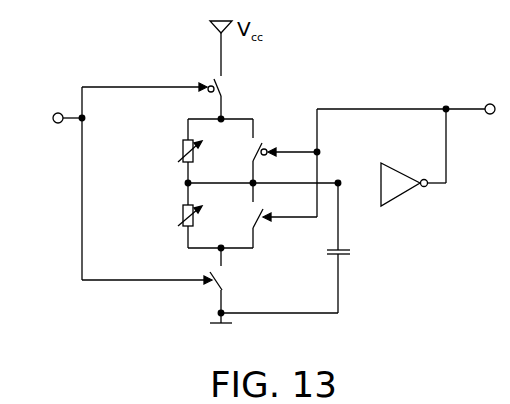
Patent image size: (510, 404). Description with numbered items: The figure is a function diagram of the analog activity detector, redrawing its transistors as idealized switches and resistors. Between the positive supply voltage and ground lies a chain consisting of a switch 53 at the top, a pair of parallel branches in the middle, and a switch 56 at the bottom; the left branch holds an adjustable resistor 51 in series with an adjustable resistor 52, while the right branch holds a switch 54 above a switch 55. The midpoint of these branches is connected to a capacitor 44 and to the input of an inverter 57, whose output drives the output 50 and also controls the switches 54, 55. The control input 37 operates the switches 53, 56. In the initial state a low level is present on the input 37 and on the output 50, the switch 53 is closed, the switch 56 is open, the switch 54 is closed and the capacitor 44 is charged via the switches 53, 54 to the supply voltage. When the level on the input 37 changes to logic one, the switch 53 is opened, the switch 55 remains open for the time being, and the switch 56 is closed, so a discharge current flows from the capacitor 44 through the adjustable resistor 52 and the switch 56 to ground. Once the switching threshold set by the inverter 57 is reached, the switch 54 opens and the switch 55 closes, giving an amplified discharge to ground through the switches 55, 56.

The input 37 is at (53, 115).
The capacitor 44 is at (345, 249).
The output 50 is at (486, 104).
The adjustable resistor 51 is at (180, 143).
The adjustable resistor 52 is at (181, 210).
The switch 53 is at (222, 94).
The switch 54 is at (255, 152).
The switch 55 is at (253, 219).
The switch 56 is at (222, 282).
The inverter 57 is at (395, 197).